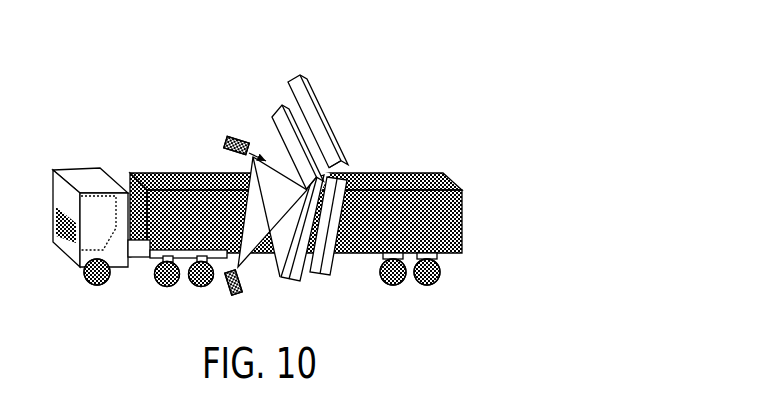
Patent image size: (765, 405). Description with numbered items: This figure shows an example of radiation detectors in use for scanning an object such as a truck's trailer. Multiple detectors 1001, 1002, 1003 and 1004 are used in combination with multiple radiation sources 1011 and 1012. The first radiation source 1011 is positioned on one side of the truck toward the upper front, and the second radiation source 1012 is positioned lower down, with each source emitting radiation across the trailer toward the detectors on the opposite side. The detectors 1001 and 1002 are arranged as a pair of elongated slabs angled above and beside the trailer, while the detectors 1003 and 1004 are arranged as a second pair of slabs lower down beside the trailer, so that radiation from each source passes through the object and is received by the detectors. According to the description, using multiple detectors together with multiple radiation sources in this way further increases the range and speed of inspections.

The detector 1001 is at (312, 100).
The detector 1002 is at (315, 153).
The detector 1003 is at (297, 276).
The detector 1004 is at (325, 268).
The radiation source 1011 is at (223, 135).
The radiation source 1012 is at (218, 290).